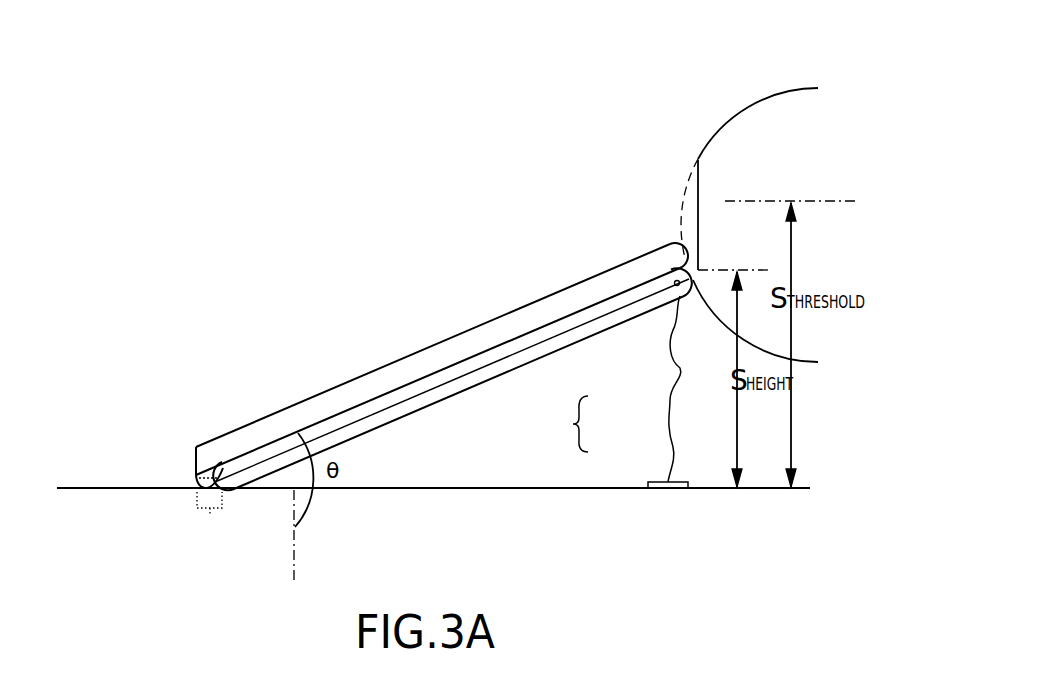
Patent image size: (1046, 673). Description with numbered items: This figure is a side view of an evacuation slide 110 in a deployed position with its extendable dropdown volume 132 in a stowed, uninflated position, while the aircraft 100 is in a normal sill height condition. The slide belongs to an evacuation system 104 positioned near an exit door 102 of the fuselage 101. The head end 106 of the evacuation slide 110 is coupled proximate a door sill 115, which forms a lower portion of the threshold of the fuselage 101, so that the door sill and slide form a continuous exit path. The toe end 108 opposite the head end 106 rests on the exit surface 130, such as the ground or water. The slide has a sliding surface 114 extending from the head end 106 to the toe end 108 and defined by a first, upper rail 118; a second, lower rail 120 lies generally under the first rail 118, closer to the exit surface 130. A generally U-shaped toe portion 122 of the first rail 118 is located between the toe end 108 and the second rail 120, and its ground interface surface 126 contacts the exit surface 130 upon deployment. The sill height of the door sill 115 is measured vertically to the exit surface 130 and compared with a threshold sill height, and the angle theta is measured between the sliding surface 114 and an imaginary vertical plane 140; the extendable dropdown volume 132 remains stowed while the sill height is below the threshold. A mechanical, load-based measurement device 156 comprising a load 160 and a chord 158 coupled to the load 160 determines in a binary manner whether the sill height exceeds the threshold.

The aircraft 100 is at (757, 92).
The fuselage 101 is at (725, 123).
The exit door 102 is at (699, 168).
The evacuation system 104 is at (382, 158).
The head end 106 is at (676, 243).
The toe end 108 is at (197, 452).
The evacuation slide 110 is at (290, 352).
The sliding surface 114 is at (385, 393).
The door sill 115 is at (699, 265).
The first rail 118 is at (463, 332).
The second rail 120 is at (430, 403).
The toe portion 122 is at (206, 522).
The ground interface surface 126 is at (205, 488).
The exit surface 130 is at (75, 488).
The extendable dropdown volume 132 is at (187, 480).
The imaginary vertical plane 140 is at (297, 537).
The measurement device 156 is at (575, 423).
The chord 158 is at (668, 401).
The load 160 is at (649, 481).